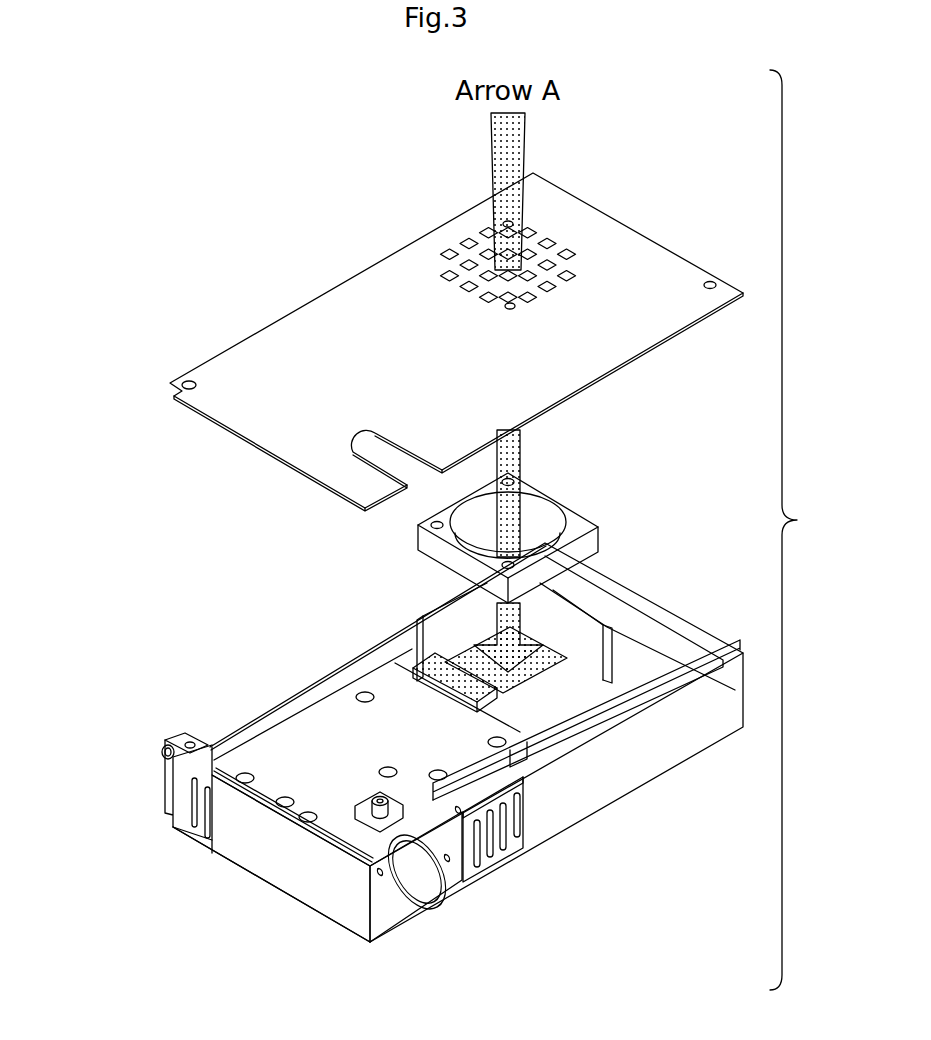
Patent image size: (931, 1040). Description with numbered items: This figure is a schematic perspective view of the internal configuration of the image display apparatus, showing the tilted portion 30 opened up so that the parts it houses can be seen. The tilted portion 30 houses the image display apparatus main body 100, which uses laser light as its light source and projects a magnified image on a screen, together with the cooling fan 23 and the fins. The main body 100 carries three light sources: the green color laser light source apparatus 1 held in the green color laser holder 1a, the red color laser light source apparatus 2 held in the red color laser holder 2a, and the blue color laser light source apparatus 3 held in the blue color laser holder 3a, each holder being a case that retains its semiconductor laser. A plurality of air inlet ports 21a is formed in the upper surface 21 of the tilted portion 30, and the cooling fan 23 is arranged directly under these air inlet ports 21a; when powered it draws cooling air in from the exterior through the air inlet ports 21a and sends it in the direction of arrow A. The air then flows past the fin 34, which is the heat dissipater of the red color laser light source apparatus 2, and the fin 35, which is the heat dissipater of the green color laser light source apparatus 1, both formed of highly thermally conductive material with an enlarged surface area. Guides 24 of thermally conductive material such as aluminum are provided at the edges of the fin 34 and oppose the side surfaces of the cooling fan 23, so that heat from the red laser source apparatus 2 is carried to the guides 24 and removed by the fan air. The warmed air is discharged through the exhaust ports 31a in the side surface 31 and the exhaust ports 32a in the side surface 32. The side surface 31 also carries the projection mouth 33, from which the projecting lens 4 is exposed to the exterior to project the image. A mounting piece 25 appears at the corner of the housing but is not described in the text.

The tilted portion 30 is at (836, 539).
The upper surface 21 is at (280, 320).
The air inlet ports 21a is at (557, 247).
The cooling fan 23 is at (578, 552).
The green color laser light source apparatus 1 is at (523, 717).
The green color laser holder 1a is at (567, 703).
The red color laser light source apparatus 2 is at (427, 687).
The red color laser holder 2a is at (412, 663).
The guides 24 is at (430, 610).
The fin 34 is at (467, 613).
The image display apparatus main body 100 is at (342, 738).
The mounting tab 25 is at (166, 753).
The side surface 32 is at (280, 850).
The exhaust ports 32a is at (194, 830).
The projection mouth 33 is at (377, 893).
The projecting lens 4 is at (405, 860).
The blue color laser light source apparatus 3 is at (550, 767).
The blue color laser holder 3a is at (533, 803).
The side surface 31 is at (682, 717).
The exhaust ports 31a is at (505, 858).
The fin 35 is at (578, 728).